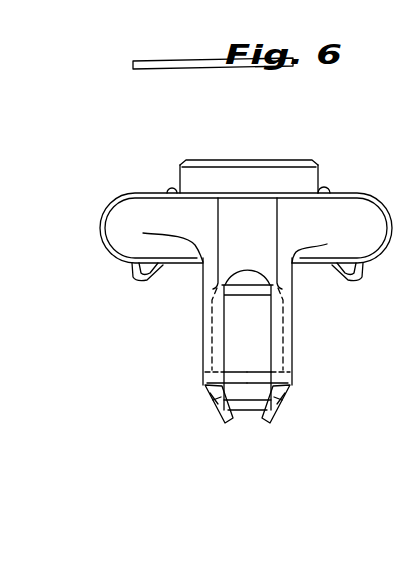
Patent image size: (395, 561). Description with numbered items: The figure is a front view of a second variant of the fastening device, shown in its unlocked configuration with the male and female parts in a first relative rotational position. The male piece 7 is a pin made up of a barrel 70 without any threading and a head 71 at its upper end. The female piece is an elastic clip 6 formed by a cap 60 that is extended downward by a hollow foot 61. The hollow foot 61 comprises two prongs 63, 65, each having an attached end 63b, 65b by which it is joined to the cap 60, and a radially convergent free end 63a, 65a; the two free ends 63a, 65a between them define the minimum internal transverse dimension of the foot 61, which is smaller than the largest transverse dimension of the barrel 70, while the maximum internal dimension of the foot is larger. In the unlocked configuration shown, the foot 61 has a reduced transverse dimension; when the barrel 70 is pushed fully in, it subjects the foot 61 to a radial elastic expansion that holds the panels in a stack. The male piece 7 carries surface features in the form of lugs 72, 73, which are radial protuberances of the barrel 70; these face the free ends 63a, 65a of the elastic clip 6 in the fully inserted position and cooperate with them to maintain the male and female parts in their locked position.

The elastic clip 6 is at (100, 263).
The male piece 7 is at (200, 151).
The cap 60 is at (110, 200).
The hollow foot 61 is at (194, 301).
The prong 63 is at (200, 330).
The free end 63a is at (223, 423).
The attached end 63b is at (173, 236).
The prong 65 is at (297, 323).
The free end 65a is at (268, 425).
The attached end 65b is at (327, 244).
The barrel 70 is at (262, 228).
The head 71 is at (260, 173).
The lug 72 is at (203, 373).
The lug 73 is at (292, 373).